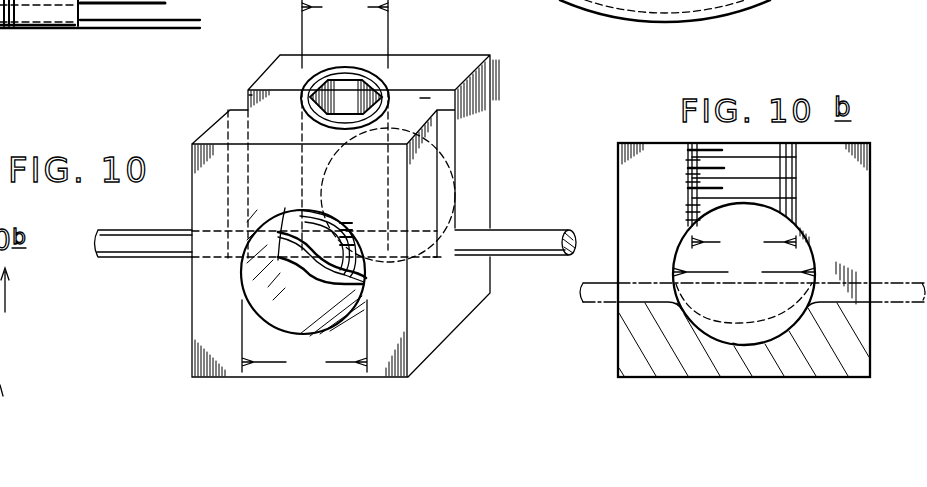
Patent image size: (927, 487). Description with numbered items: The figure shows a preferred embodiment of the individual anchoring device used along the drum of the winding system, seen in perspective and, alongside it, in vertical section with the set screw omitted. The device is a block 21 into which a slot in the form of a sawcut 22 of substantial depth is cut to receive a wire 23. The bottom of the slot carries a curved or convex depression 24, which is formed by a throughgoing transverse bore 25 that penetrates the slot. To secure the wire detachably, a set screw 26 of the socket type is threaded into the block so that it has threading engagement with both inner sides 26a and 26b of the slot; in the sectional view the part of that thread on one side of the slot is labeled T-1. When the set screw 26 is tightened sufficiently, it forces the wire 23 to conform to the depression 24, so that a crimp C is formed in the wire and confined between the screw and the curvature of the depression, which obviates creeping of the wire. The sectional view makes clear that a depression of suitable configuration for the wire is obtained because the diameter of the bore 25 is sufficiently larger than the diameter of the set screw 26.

In FIG. 10, the block 21 is at (176, 365).
In FIG. 10B, the block 21 is at (876, 171).
In FIG. 10, the sawcut 22 is at (268, 97).
In FIG. 10, the wire 23 is at (148, 246).
In FIG. 10B, the wire 23 is at (595, 303).
In FIG. 10B, the depression 24 is at (731, 338).
In FIG. 10B, the transverse bore 25 is at (811, 258).
In FIG. 10, the set screw 26 is at (357, 80).
In FIG. 10, the inner side of the slot 26a is at (432, 98).
In FIG. 10, the inner side of the slot 26b is at (472, 137).
In FIG. 10, the crimp C is at (324, 272).
In FIG. 10B, the component part of the thread T-1 is at (688, 178).